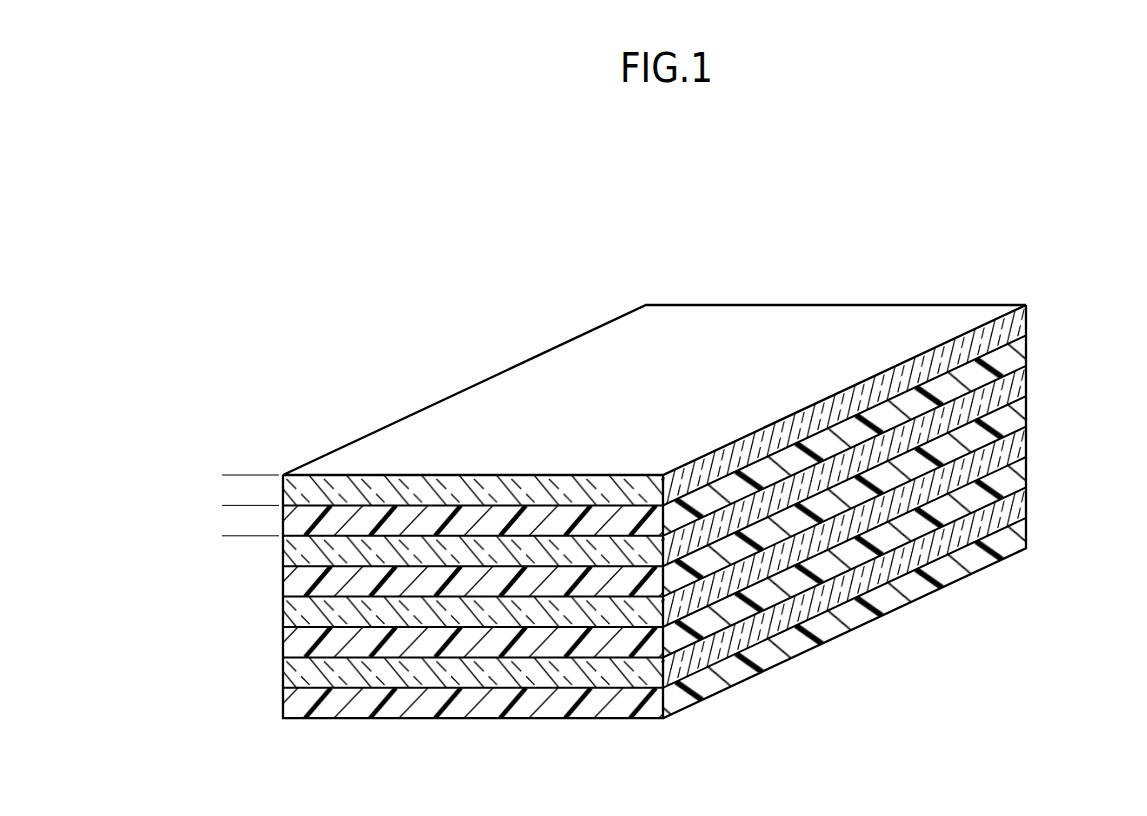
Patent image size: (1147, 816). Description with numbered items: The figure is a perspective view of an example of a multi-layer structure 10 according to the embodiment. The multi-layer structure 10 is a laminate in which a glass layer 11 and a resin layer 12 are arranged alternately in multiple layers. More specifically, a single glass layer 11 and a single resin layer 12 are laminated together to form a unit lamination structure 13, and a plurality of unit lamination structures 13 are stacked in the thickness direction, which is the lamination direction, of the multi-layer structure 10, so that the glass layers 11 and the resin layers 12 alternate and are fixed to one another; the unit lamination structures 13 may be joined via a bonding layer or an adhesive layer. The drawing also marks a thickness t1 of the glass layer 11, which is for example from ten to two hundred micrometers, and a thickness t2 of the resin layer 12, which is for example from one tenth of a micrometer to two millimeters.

The multi-layer structure 10 is at (696, 480).
The glass layer 11 is at (1025, 322).
The resin layer 12 is at (690, 526).
The unit lamination structure 13 is at (713, 509).
The thickness of the glass layer t1 is at (230, 478).
The thickness of the resin layer t2 is at (230, 508).